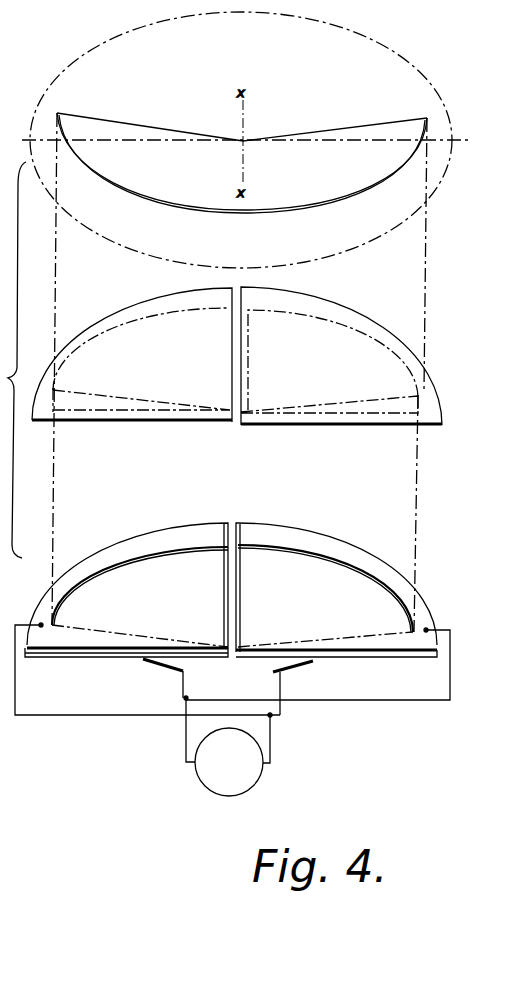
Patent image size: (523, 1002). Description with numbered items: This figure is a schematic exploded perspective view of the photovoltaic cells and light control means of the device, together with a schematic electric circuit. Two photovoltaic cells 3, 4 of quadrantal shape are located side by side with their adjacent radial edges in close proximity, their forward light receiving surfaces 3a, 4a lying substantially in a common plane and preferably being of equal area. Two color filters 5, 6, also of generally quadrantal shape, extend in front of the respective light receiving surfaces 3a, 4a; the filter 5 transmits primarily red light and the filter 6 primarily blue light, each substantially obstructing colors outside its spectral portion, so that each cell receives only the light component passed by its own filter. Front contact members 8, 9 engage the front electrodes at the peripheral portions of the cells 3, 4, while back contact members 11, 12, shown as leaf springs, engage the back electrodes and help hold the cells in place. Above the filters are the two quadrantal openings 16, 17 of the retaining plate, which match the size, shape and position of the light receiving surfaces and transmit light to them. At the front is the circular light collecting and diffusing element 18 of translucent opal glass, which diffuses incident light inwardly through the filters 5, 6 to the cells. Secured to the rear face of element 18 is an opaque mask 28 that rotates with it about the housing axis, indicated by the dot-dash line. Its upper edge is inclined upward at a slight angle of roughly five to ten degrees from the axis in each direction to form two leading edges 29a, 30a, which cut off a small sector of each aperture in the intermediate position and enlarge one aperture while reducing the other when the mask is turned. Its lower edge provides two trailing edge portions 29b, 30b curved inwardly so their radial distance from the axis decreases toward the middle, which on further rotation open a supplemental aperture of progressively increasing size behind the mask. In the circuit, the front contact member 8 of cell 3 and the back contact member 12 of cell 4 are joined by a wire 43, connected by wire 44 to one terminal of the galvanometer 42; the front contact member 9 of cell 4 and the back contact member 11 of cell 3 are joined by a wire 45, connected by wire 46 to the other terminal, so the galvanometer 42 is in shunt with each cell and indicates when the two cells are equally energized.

The photovoltaic cell 3 is at (177, 565).
The light receiving surface 3a is at (135, 575).
The photovoltaic cell 4 is at (302, 568).
The light receiving surface 4a is at (342, 587).
The color filter 5 is at (147, 330).
The color filter 6 is at (308, 330).
The front contact member 8 is at (126, 577).
The front contact member 9 is at (336, 576).
The back contact member 11 is at (161, 671).
The back contact member 12 is at (292, 672).
The quadrantal opening 16 is at (132, 353).
The quadrantal opening 17 is at (341, 354).
The light collecting and diffusing element 18 is at (403, 53).
The opaque mask 28 is at (242, 167).
The leading edge 29a is at (148, 126).
The trailing edge portion 29b is at (131, 183).
The leading edge 30a is at (345, 128).
The trailing edge portion 30b is at (348, 197).
The galvanometer 42 is at (204, 790).
The wire 43 is at (80, 713).
The wire 44 is at (273, 742).
The wire 45 is at (371, 697).
The wire 46 is at (185, 744).